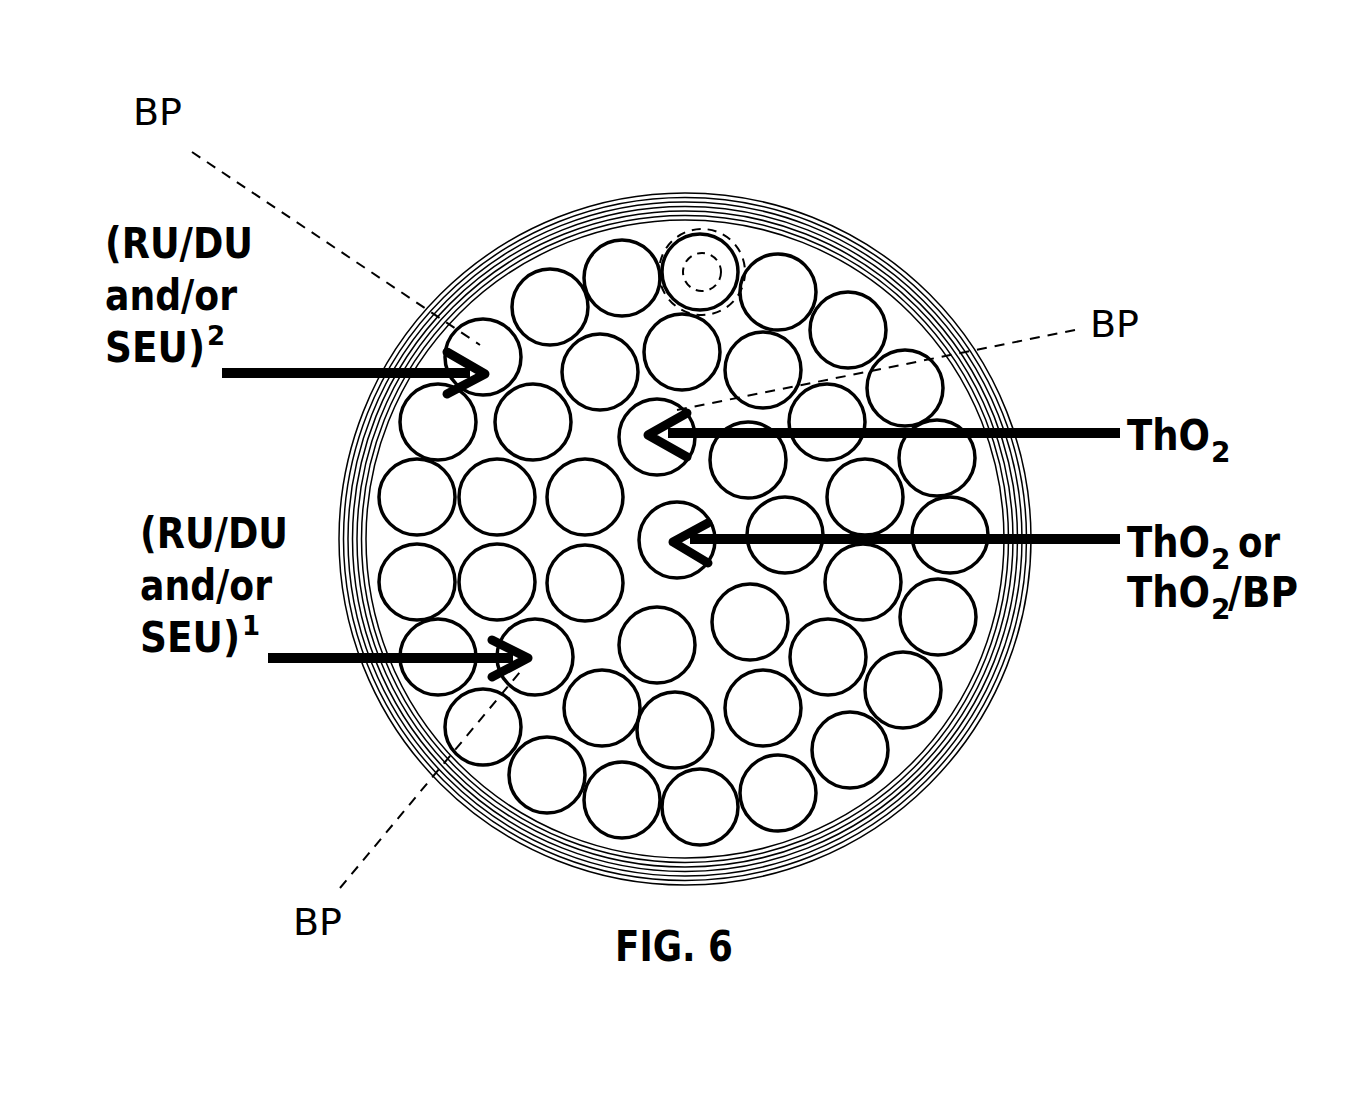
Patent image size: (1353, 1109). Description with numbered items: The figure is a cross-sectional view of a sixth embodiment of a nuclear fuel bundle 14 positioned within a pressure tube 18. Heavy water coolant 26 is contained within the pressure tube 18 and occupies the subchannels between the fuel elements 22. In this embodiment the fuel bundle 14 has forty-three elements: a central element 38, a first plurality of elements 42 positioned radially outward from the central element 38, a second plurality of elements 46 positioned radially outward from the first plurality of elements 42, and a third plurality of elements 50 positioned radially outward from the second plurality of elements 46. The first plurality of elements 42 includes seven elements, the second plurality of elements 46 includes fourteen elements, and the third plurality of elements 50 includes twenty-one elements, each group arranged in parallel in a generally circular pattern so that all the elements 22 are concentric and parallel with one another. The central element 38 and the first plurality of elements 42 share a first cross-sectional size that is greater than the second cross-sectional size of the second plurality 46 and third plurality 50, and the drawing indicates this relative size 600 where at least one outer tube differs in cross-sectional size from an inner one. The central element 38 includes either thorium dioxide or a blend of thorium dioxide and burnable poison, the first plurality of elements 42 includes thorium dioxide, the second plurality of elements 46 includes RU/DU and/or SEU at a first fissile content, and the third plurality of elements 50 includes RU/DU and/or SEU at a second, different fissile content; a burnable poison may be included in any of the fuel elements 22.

The fuel bundle 14 is at (647, 240).
The pressure tube 18 is at (823, 237).
The heavy water coolant 26 is at (898, 333).
The central element 38 is at (642, 528).
The second plurality of elements 46 is at (493, 537).
The third plurality of elements 50 is at (460, 688).
The first plurality of elements 42 is at (618, 620).
The fuel elements 22 is at (757, 662).
The relative size 600 is at (712, 236).